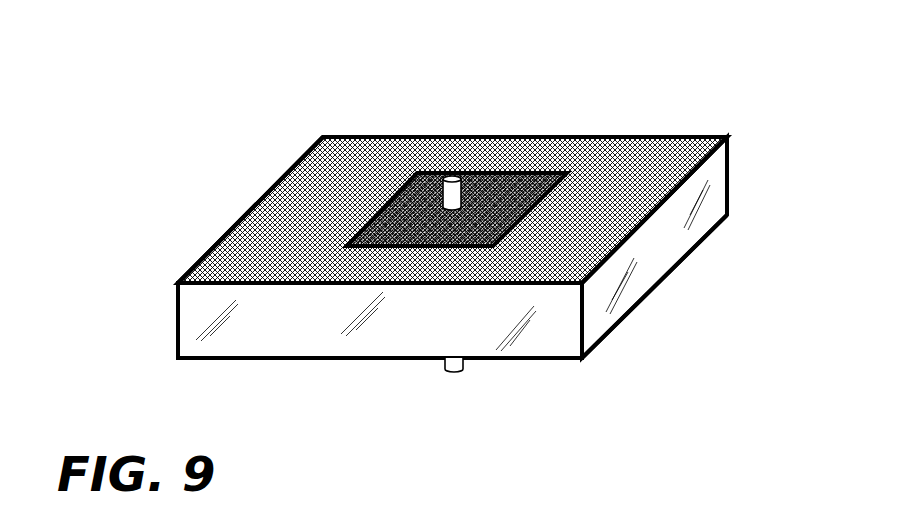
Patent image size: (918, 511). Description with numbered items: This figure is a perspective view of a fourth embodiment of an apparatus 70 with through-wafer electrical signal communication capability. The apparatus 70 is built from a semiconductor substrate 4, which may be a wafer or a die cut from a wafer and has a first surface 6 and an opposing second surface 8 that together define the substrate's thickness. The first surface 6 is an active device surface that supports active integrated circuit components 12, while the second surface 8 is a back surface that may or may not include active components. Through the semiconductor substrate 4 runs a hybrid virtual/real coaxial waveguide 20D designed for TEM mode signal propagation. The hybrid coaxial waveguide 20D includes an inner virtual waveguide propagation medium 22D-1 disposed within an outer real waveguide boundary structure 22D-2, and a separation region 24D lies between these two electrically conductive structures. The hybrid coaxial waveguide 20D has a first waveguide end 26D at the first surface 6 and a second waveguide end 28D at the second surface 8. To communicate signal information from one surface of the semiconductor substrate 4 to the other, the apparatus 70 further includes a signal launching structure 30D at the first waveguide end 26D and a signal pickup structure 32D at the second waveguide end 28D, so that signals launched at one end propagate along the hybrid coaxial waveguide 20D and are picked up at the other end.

The semiconductor substrate 4 is at (445, 248).
The first surface 6 is at (625, 148).
The second surface 8 is at (390, 360).
The active integrated circuit components 12 is at (190, 270).
The hybrid virtual/real coaxial waveguide 20D is at (162, 321).
The inner virtual waveguide propagation medium 22D-1 is at (493, 174).
The outer real waveguide boundary structure 22D-2 is at (660, 243).
The separation region 24D is at (277, 222).
The first waveguide end 26D is at (354, 165).
The second waveguide end 28D is at (512, 372).
The signal launching structure 30D is at (450, 177).
The signal pickup structure 32D is at (455, 373).
The apparatus 70 is at (214, 101).